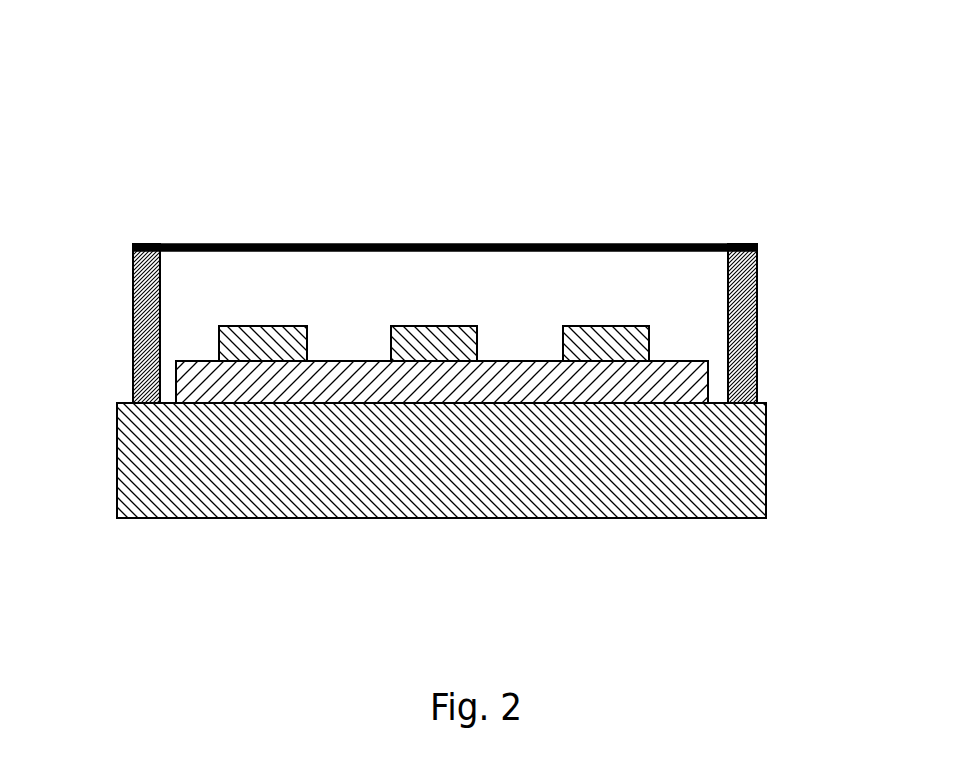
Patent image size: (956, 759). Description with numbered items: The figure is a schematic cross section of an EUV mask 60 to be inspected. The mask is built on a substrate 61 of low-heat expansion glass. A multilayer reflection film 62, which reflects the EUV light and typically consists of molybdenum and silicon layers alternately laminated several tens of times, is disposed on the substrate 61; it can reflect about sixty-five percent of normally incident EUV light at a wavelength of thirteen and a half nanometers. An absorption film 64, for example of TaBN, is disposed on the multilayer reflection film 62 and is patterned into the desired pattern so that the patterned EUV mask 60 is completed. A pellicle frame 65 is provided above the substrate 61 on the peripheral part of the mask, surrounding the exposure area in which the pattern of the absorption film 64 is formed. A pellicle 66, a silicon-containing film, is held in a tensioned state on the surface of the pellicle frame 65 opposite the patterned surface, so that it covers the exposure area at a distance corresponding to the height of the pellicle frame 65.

The EUV mask 60 is at (60, 43).
The substrate 61 is at (767, 485).
The multilayer reflection film 62 is at (678, 373).
The absorption film 64 is at (262, 337).
The pellicle frame 65 is at (133, 290).
The pellicle 66 is at (710, 244).